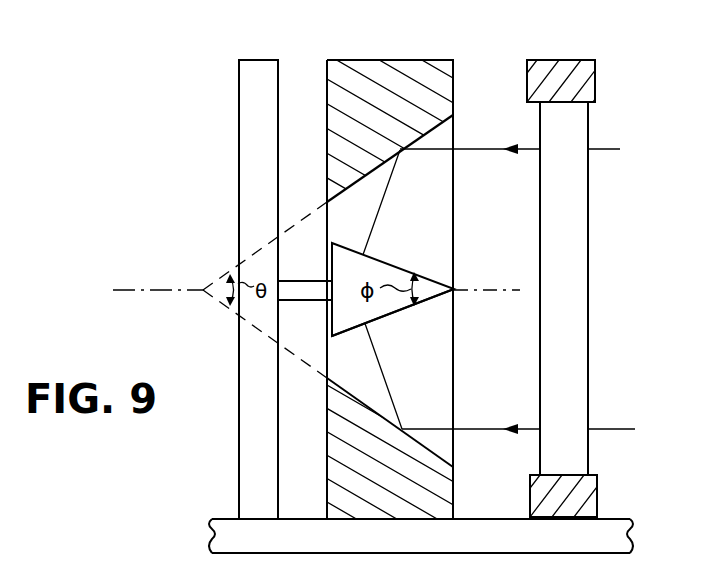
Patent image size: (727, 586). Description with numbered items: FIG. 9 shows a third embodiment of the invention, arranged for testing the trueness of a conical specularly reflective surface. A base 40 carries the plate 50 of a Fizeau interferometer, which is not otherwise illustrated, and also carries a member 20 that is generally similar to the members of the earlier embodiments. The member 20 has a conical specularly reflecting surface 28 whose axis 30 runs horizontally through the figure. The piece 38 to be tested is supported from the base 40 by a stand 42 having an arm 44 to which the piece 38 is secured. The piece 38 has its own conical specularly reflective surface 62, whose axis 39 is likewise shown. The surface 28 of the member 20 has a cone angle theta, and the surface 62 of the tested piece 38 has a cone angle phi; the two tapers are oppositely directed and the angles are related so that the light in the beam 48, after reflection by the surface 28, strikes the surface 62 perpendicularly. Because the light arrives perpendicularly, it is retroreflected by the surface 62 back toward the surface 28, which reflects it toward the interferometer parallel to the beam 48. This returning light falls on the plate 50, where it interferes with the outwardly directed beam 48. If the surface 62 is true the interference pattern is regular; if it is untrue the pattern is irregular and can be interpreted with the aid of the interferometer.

The member 20 is at (352, 49).
The conical specularly reflecting surface 28 is at (436, 128).
The axis 30 is at (508, 290).
The piece to be tested 38 is at (385, 265).
The axis 39 is at (150, 290).
The base 40 is at (225, 523).
The stand 42 is at (245, 97).
The arm 44 is at (300, 281).
The beam 48 is at (621, 149).
The plate 50 is at (577, 263).
The conical specularly reflective surface 62 is at (404, 310).